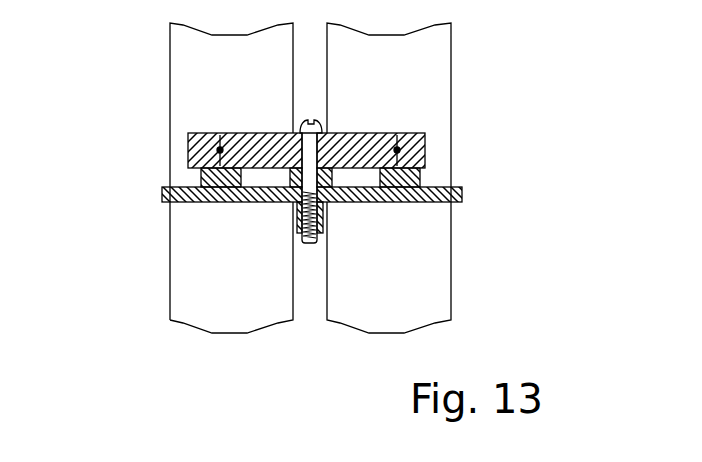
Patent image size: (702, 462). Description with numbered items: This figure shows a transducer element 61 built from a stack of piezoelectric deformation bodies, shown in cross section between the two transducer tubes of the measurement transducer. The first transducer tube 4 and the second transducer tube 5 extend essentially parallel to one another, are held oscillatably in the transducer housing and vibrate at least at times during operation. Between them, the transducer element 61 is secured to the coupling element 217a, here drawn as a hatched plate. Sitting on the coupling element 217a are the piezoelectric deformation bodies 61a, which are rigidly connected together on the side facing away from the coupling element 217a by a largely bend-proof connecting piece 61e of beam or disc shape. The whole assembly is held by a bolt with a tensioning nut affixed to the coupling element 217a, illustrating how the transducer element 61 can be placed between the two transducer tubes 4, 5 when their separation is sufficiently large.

The first transducer tube 4 is at (193, 75).
The second transducer tube 5 is at (438, 68).
The transducer element 61 is at (140, 116).
The deformation body 61a is at (200, 175).
The connecting piece 61e is at (366, 150).
The coupling element 217a is at (162, 190).